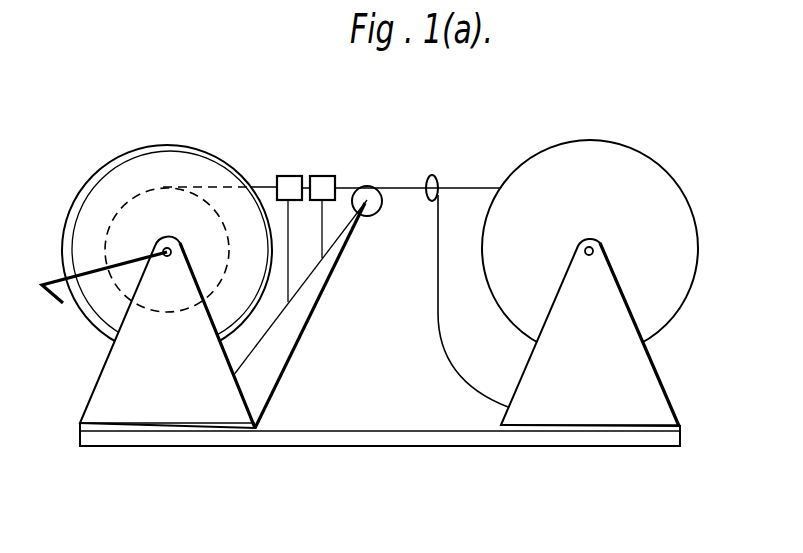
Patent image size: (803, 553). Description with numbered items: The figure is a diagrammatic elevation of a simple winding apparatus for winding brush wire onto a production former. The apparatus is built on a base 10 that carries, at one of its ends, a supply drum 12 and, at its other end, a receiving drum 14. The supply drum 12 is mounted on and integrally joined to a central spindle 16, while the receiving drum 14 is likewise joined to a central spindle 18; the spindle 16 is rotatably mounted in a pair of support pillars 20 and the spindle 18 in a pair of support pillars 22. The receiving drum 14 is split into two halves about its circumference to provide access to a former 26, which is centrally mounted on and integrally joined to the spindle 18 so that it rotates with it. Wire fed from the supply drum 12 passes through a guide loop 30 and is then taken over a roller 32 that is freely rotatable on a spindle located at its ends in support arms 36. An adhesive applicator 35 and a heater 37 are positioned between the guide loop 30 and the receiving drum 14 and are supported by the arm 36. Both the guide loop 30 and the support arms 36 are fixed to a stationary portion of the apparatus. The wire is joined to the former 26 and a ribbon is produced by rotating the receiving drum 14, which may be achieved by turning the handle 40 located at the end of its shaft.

The base 10 is at (418, 438).
The supply drum 12 is at (620, 148).
The receiving drum 14 is at (187, 145).
The central spindle 16 is at (598, 238).
The central spindle 18 is at (167, 257).
The support pillars 20 is at (647, 372).
The support pillars 22 is at (97, 397).
The former 26 is at (202, 195).
The guide loop 30 is at (437, 177).
The roller 32 is at (367, 201).
The adhesive applicator 35 is at (327, 176).
The support arms 36 is at (297, 332).
The heater 37 is at (292, 176).
The handle 40 is at (63, 303).